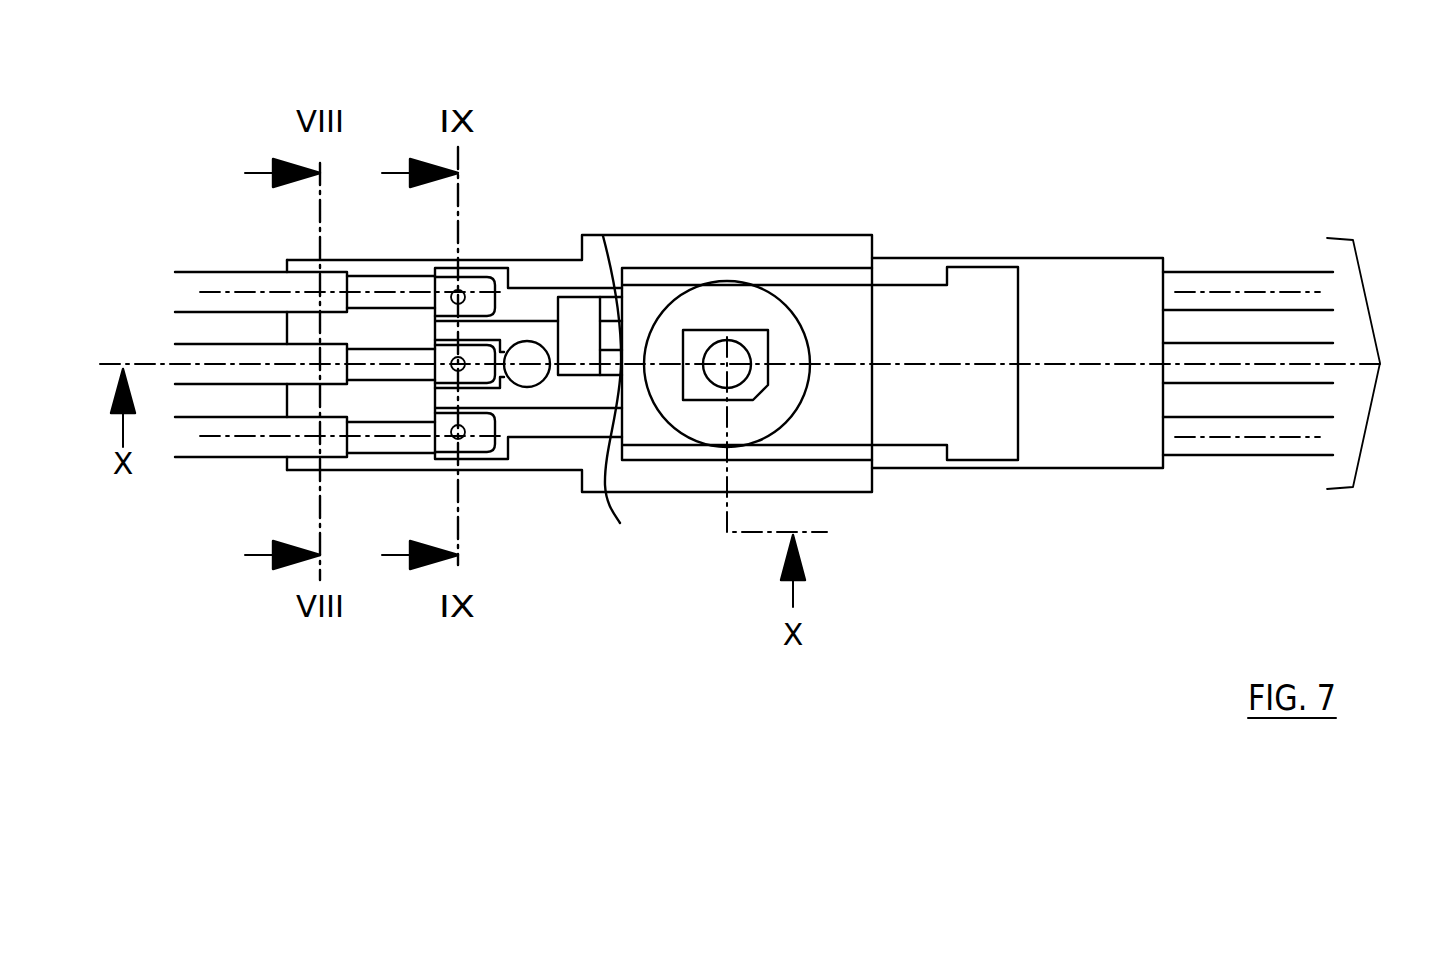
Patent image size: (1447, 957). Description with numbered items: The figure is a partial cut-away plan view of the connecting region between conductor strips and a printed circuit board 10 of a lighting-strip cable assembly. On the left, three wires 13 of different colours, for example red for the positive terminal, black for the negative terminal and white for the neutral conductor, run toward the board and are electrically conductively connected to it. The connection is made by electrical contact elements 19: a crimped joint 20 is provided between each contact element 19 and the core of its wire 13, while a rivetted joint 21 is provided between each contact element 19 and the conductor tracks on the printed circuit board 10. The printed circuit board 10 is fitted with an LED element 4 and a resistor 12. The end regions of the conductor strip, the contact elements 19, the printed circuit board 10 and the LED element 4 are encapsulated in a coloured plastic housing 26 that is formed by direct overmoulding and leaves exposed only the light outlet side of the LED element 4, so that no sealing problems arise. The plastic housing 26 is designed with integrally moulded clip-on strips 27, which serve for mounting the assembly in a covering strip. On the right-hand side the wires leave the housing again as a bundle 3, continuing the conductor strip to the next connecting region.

The light guide bundle 3 is at (1380, 363).
The LED element 4 is at (760, 337).
The printed circuit board 10 is at (620, 523).
The resistor 12 is at (572, 323).
The wires 13 is at (1233, 280).
The electrical contact elements 19 is at (370, 447).
The crimped joint 20 is at (223, 283).
The rivetted joint 21 is at (467, 435).
The plastic housing 26 is at (1127, 440).
The clip-on strips 27 is at (944, 566).